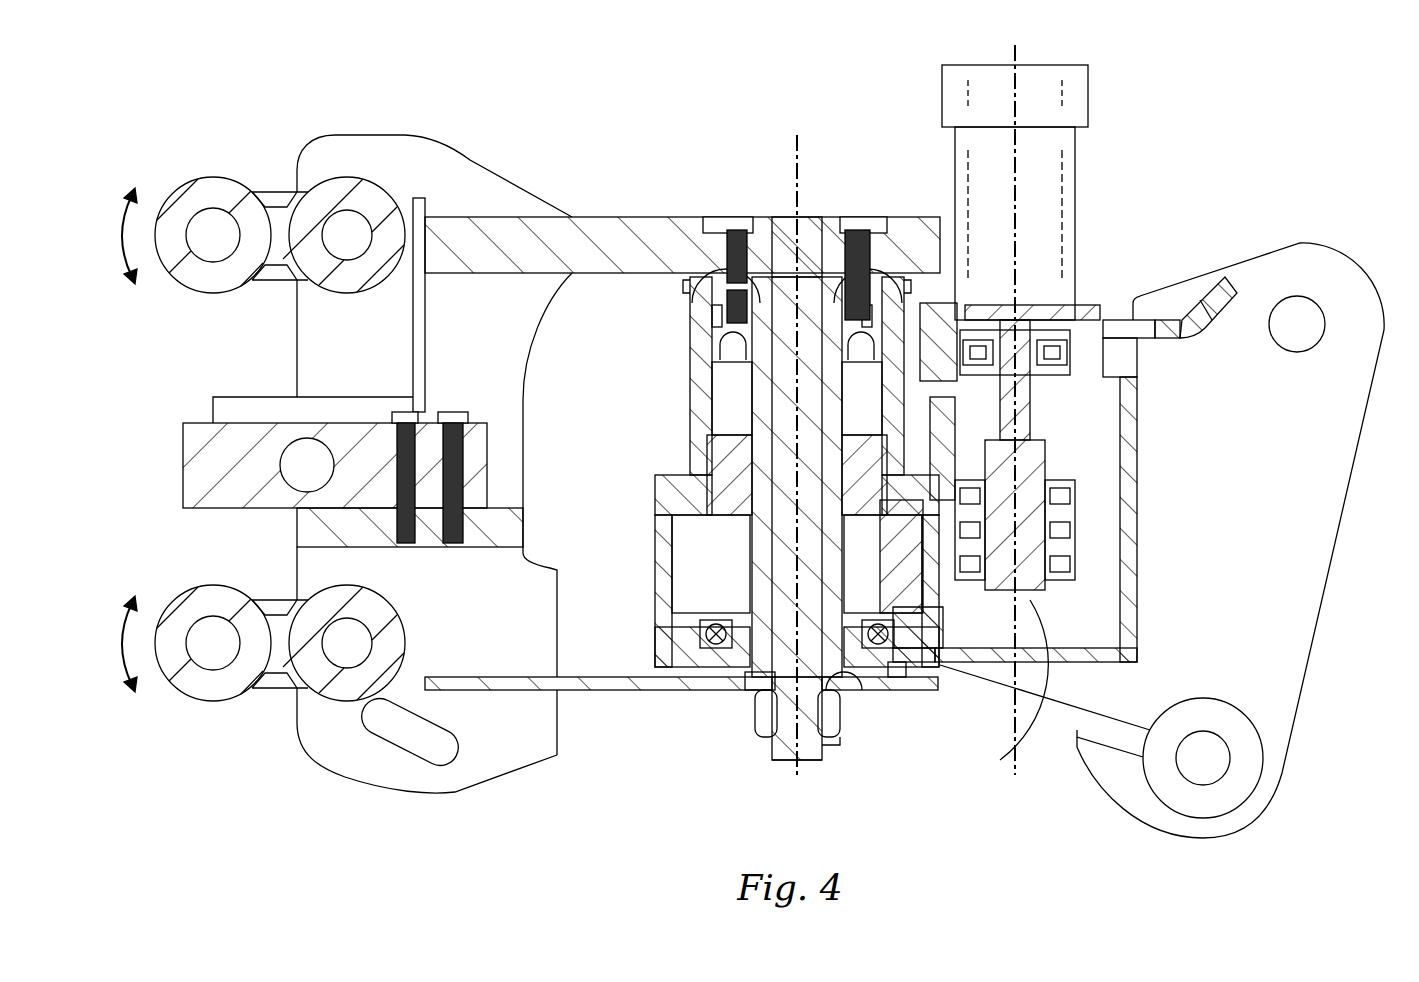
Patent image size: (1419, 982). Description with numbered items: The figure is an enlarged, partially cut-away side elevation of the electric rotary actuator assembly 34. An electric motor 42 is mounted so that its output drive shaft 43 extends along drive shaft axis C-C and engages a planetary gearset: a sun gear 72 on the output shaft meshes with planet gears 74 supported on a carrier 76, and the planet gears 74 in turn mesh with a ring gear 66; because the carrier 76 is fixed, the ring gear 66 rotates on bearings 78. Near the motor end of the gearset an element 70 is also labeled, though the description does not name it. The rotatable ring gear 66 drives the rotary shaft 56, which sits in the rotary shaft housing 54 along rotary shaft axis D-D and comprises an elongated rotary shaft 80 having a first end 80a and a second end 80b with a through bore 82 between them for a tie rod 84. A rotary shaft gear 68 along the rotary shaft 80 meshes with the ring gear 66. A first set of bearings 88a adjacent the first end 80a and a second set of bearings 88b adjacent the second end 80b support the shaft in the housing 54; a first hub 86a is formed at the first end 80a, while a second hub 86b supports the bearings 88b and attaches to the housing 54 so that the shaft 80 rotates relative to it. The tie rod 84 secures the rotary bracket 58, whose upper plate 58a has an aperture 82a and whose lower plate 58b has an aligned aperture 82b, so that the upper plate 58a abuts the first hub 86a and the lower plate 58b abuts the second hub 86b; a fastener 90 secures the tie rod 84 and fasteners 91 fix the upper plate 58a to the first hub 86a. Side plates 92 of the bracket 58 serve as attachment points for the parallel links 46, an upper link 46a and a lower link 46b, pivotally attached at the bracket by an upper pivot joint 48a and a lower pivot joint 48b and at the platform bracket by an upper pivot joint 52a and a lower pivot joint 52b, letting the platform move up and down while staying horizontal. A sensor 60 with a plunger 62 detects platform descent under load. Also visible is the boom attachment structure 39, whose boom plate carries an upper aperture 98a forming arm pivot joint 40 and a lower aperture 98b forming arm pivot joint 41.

The electric rotary actuator assembly 34 is at (745, 108).
The boom attachment structure 39 is at (1355, 570).
The arm pivot joint 40 is at (1170, 336).
The arm pivot joint 41 is at (1212, 755).
The electric motor 42 is at (1080, 185).
The output drive shaft 43 is at (1025, 335).
The links 46 is at (272, 714).
The upper link 46a is at (185, 283).
The lower link 46b is at (185, 691).
The upper pivot joint 48a is at (345, 240).
The lower pivot joint 48b is at (350, 640).
The upper pivot joint 52a is at (211, 233).
The lower pivot joint 52b is at (211, 641).
The rotary shaft housing 54 is at (700, 448).
The rotary shaft 56 is at (775, 215).
The rotary bracket 58 is at (612, 714).
The upper plate 58a is at (600, 238).
The lower plate 58b is at (510, 692).
The sensor 60 is at (266, 514).
The plunger 62 is at (252, 405).
The ring gear 66 is at (1130, 640).
The rotary shaft gear 68 is at (690, 562).
The cap 70 is at (1045, 328).
The sun gear 72 is at (1042, 468).
The planet gears 74 is at (935, 328).
The carrier 76 is at (1025, 690).
The bearings 78 is at (1075, 560).
The rotary shaft 80 is at (775, 440).
The first end 80a is at (728, 298).
The second end 80b is at (848, 700).
The through bore 82 is at (760, 737).
The aperture 82a is at (855, 240).
The aperture 82b is at (752, 698).
The tie rod 84 is at (815, 768).
The first hub 86a is at (683, 290).
The second hub 86b is at (895, 680).
The first set of bearings 88a is at (727, 400).
The second set of bearings 88b is at (712, 620).
The fastener 90 is at (826, 747).
The fasteners 91 is at (737, 240).
The side plates 92 is at (500, 791).
The upper aperture 98a is at (1292, 348).
The lower aperture 98b is at (1215, 810).